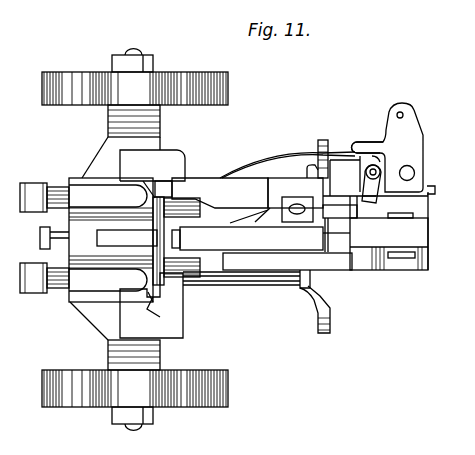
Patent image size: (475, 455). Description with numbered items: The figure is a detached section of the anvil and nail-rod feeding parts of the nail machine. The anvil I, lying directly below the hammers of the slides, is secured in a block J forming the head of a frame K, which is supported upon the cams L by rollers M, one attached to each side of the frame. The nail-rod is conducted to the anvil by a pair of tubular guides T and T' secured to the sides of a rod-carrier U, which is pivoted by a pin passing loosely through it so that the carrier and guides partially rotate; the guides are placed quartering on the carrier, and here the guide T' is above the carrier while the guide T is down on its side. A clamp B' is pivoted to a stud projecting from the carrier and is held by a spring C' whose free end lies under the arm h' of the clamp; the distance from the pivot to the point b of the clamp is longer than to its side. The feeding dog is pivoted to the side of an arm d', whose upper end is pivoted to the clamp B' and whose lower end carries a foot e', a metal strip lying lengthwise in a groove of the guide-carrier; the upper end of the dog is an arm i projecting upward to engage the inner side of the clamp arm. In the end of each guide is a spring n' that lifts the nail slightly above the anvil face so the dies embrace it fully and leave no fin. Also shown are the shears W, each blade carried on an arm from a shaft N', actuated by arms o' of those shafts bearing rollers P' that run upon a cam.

The cam L is at (135, 230).
The roller M is at (134, 240).
The shears W is at (152, 244).
The spring n' is at (176, 233).
The guide T is at (247, 200).
The rod-carrier U is at (250, 216).
The guide T' is at (264, 228).
The spring C' is at (287, 205).
The shaft N' is at (241, 286).
The roller P' is at (324, 228).
The arm o' is at (309, 227).
The clamp B' is at (375, 186).
The arm of clamp h' is at (367, 138).
The arm d' is at (358, 184).
The arm of dog i is at (379, 167).
The foot e' is at (365, 168).
The point of clamp b is at (434, 188).
The frame K is at (114, 238).
The anvil I is at (127, 237).
The block J is at (60, 238).